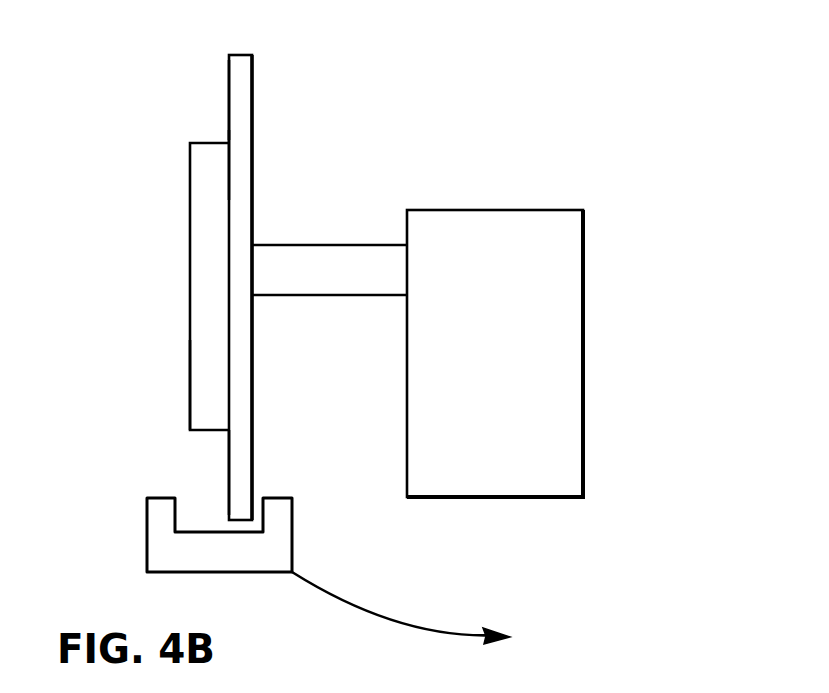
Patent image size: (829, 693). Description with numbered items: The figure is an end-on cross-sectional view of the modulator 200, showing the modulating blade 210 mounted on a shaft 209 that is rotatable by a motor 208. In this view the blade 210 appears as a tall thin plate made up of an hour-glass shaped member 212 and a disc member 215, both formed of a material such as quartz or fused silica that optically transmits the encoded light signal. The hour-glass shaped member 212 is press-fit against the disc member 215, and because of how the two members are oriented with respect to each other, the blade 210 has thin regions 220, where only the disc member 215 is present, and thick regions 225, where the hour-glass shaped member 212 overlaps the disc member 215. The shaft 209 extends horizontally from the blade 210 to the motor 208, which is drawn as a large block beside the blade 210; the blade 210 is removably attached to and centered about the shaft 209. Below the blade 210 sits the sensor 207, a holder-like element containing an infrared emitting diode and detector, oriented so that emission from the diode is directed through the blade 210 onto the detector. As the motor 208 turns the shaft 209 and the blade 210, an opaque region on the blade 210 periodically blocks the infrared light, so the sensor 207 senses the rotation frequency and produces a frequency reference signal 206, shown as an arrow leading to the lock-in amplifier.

The modulator 200 is at (412, 70).
The frequency reference signal 206 is at (357, 608).
The sensor 207 is at (162, 545).
The motor 208 is at (550, 230).
The shaft 209 is at (302, 280).
The modulating blade 210 is at (238, 72).
The hour-glass shaped member 212 is at (206, 224).
The disc member 215 is at (238, 167).
The thin regions 220 is at (228, 98).
The thick regions 225 is at (190, 405).